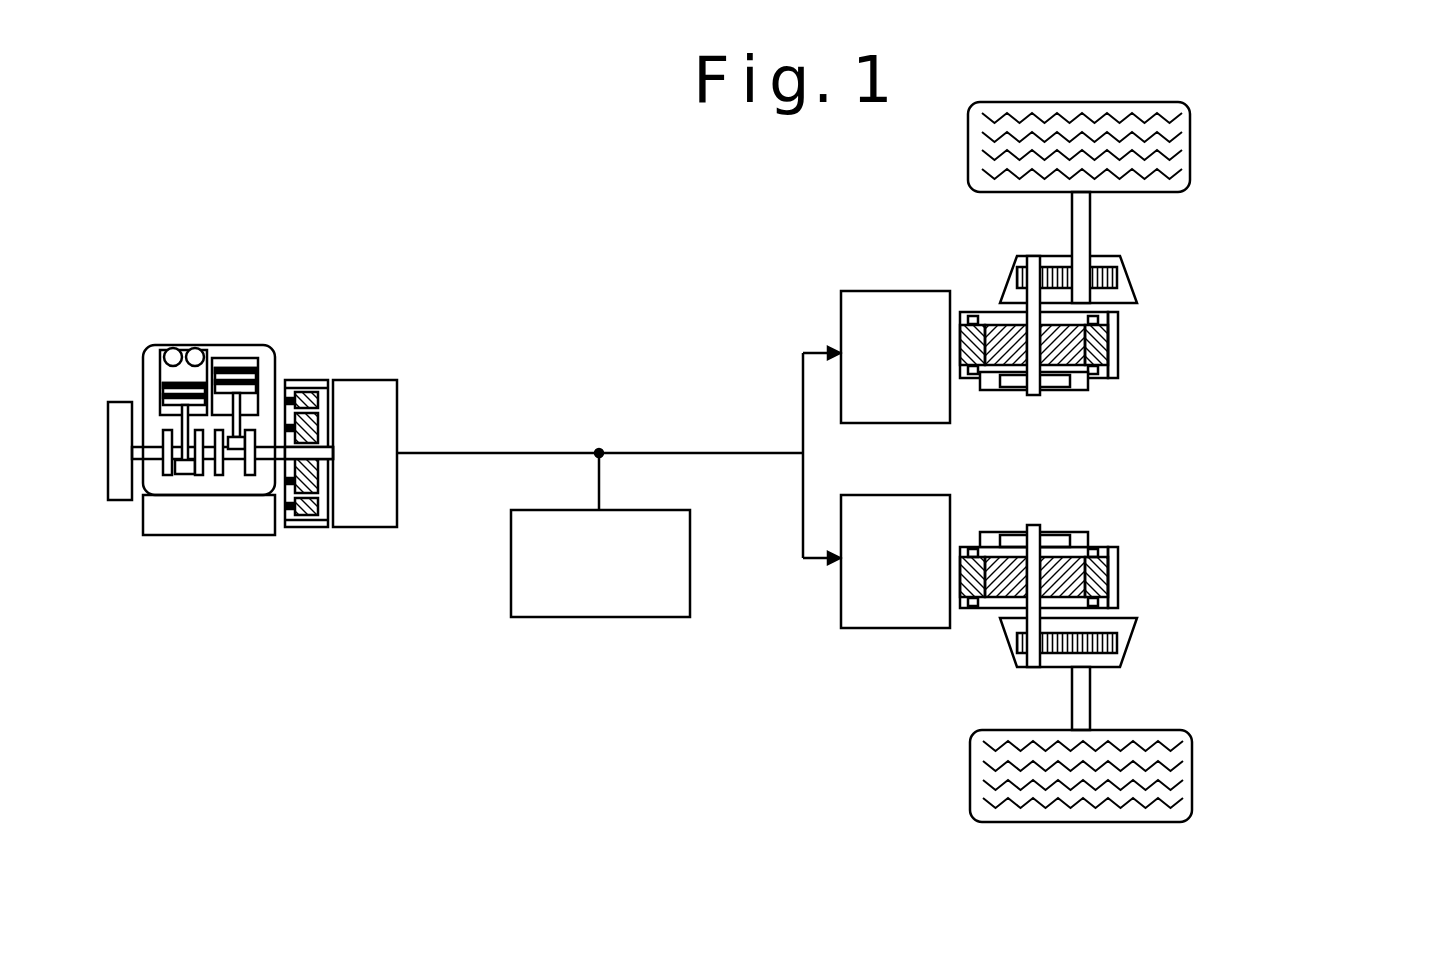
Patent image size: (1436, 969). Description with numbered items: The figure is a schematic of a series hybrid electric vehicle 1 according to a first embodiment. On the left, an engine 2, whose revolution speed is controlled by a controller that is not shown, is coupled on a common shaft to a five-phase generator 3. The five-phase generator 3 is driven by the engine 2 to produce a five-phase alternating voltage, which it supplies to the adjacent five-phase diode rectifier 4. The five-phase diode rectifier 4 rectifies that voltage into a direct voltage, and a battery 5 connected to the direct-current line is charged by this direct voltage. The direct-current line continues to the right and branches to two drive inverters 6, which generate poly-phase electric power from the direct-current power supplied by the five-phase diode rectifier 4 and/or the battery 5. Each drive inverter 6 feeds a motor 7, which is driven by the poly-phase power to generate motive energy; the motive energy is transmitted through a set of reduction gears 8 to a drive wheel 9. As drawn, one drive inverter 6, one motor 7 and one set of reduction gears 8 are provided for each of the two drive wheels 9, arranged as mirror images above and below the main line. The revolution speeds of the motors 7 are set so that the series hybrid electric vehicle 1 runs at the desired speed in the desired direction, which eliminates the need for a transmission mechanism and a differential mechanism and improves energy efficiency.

The series hybrid electric vehicle 1 is at (370, 157).
The engine 2 is at (175, 535).
The five-phase generator 3 is at (308, 380).
The five-phase diode rectifier 4 is at (358, 380).
The battery 5 is at (511, 577).
The drive inverter 6 is at (870, 291).
The motor 7 is at (1118, 355).
The reduction gears 8 is at (1130, 283).
The drive wheel 9 is at (1190, 147).